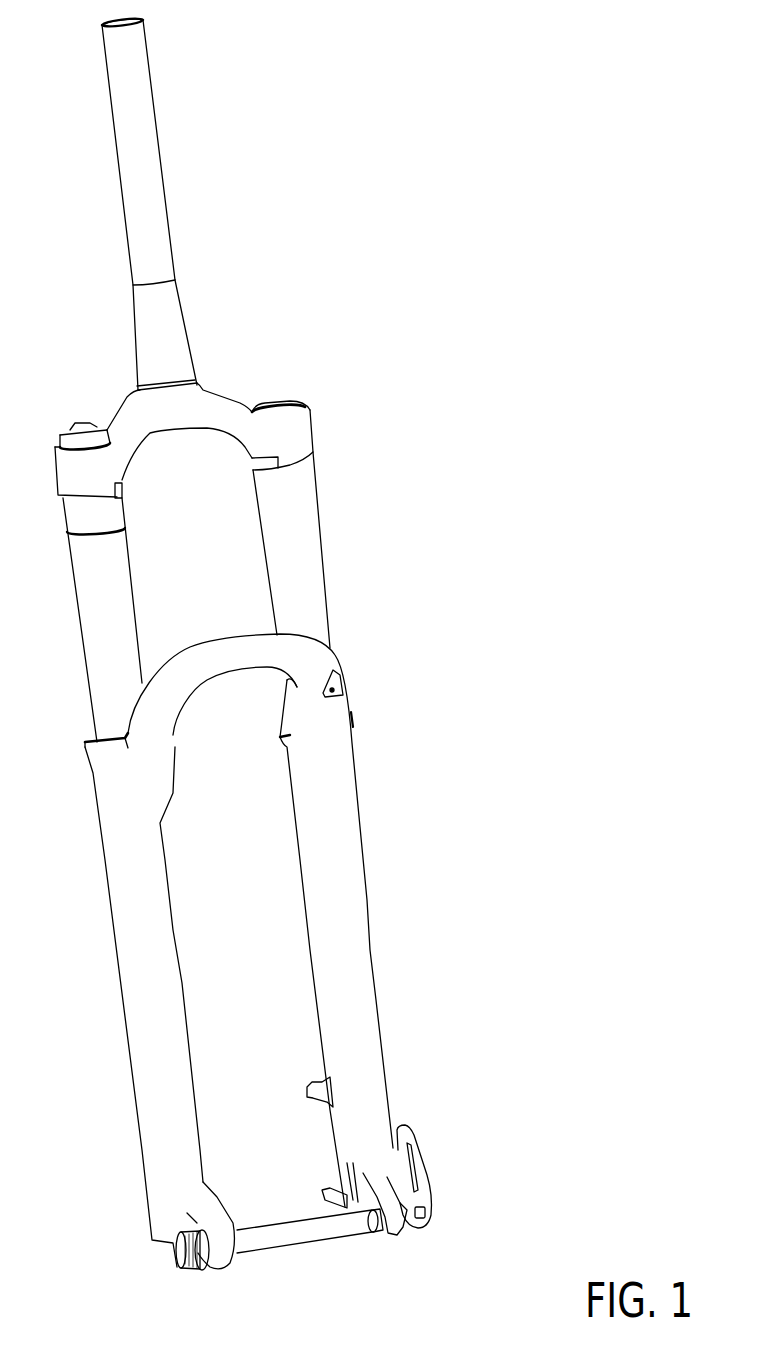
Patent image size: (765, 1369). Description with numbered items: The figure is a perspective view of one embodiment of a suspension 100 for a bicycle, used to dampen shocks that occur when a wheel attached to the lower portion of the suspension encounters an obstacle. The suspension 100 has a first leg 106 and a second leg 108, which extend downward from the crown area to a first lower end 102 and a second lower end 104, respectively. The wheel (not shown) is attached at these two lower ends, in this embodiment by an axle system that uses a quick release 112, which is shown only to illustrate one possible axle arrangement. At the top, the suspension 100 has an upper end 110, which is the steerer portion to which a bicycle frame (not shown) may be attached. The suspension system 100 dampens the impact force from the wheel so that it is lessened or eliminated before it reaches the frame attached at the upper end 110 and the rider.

The suspension 100 is at (382, 652).
The first lower end 102 is at (397, 1237).
The second lower end 104 is at (170, 1243).
The first leg 106 is at (368, 1007).
The second leg 108 is at (140, 1078).
The upper end 110 is at (140, 77).
The quick release 112 is at (430, 1197).